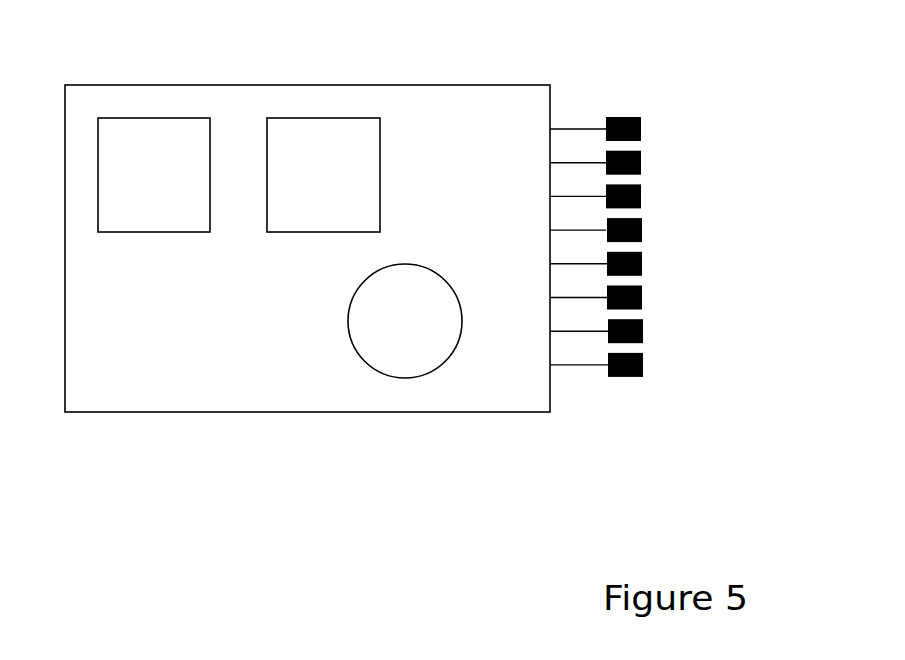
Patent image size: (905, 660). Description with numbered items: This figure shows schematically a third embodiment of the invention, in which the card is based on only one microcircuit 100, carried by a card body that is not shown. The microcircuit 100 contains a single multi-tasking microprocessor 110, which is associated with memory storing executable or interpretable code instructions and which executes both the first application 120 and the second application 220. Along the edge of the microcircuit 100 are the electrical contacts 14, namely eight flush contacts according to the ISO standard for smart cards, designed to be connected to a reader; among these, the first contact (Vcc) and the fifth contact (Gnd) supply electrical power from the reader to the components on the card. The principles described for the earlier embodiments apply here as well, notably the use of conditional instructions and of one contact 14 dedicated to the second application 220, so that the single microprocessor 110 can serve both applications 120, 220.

The first microcircuit 100 is at (116, 445).
The first microprocessor 110 is at (409, 340).
The first application 120 is at (325, 153).
The second application 220 is at (163, 153).
The electrical contacts 14 is at (633, 412).